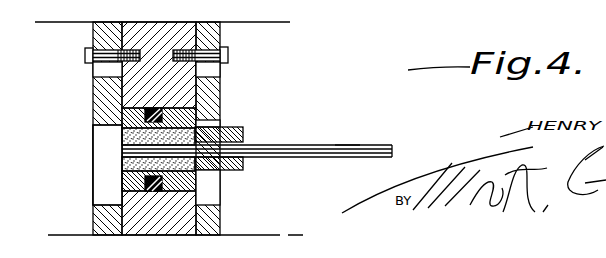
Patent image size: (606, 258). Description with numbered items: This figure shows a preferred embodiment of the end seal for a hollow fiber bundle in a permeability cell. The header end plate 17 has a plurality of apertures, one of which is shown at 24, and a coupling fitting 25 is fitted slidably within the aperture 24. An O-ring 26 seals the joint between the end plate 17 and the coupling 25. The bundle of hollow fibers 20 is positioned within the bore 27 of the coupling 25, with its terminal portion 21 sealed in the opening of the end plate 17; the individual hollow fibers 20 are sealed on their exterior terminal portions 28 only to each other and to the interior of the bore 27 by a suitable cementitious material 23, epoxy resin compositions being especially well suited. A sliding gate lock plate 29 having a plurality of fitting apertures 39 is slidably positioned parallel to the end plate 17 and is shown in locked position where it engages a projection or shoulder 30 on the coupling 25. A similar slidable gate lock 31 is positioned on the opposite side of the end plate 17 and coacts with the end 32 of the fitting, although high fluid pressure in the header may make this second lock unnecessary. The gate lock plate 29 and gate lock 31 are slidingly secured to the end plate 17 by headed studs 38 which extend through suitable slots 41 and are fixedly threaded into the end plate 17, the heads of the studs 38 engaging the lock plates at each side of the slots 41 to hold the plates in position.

The gate lock 31 is at (93, 33).
The sliding gate lock plate 29 is at (222, 33).
The header end plate 17 is at (222, 85).
The headed studs 38 is at (85, 55).
The slots 41 is at (100, 70).
The shoulder 30 is at (222, 108).
The end of the fitting 32 is at (93, 125).
The cementitious material 23 is at (122, 135).
The terminal portion 21 is at (122, 148).
The aperture 24 is at (122, 175).
The O-ring 26 is at (143, 187).
The bore 27 is at (243, 141).
The coupling fitting 25 is at (243, 170).
The fitting apertures 39 is at (205, 195).
The hollow fibers 20 is at (408, 144).
The exterior terminal portions 28 is at (340, 144).